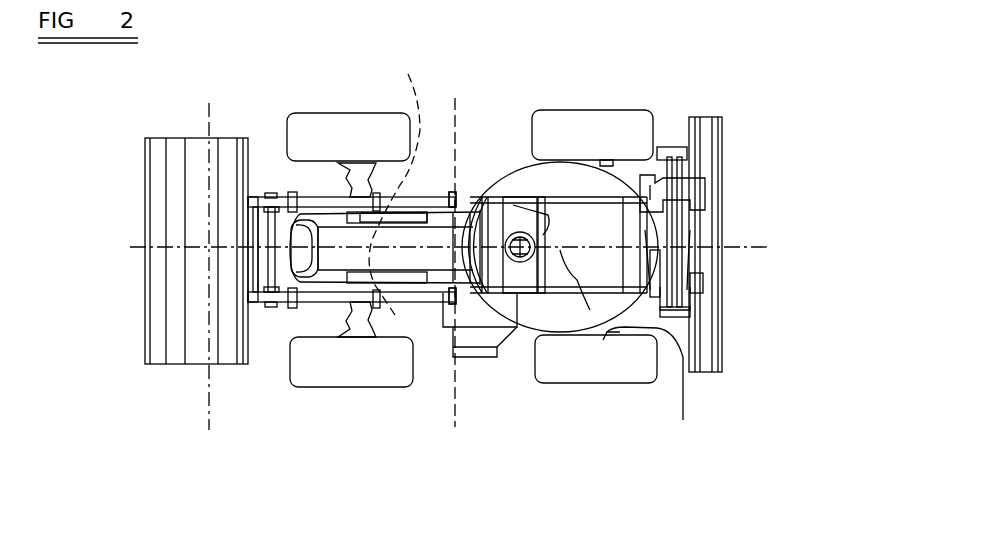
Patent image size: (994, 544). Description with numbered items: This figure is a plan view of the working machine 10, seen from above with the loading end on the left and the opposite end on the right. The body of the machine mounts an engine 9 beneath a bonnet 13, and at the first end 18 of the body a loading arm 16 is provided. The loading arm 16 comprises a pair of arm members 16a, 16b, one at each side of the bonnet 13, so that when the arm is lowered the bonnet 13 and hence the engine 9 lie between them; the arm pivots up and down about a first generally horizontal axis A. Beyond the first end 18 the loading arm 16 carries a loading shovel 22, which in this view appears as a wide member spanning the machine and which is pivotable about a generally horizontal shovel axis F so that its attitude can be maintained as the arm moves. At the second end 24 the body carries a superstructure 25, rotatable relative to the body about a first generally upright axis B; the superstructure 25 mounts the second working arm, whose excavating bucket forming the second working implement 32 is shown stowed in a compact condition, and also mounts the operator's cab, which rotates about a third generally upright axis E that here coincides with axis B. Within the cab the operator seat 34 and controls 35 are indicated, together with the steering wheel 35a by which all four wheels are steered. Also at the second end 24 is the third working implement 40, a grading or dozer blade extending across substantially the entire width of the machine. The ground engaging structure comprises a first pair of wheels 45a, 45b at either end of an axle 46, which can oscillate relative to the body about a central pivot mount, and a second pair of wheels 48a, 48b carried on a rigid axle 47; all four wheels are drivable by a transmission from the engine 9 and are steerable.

The engine 9 is at (394, 183).
The working machine 10 is at (316, 386).
The bonnet 13 is at (300, 292).
The loading arm 16 is at (318, 190).
The arm member 16a is at (433, 305).
The arm member 16b is at (440, 192).
The first end 18 is at (115, 281).
The loading shovel 22 is at (180, 366).
The second end 24 is at (732, 244).
The superstructure 25 is at (514, 352).
The second working implement 32 is at (572, 255).
The operator seat 34 is at (590, 212).
The controls 35 is at (511, 220).
The steering wheel 35a is at (520, 195).
The third working implement 40 is at (722, 230).
The wheel 45a is at (352, 388).
The wheel 45b is at (365, 112).
The axle 46 is at (390, 268).
The rigid axle 47 is at (680, 380).
The wheel 48a is at (603, 383).
The wheel 48b is at (608, 112).
The first generally horizontal axis A is at (450, 422).
The first generally upright axis B is at (590, 282).
The third generally upright axis E is at (560, 250).
The shovel axis F is at (207, 120).